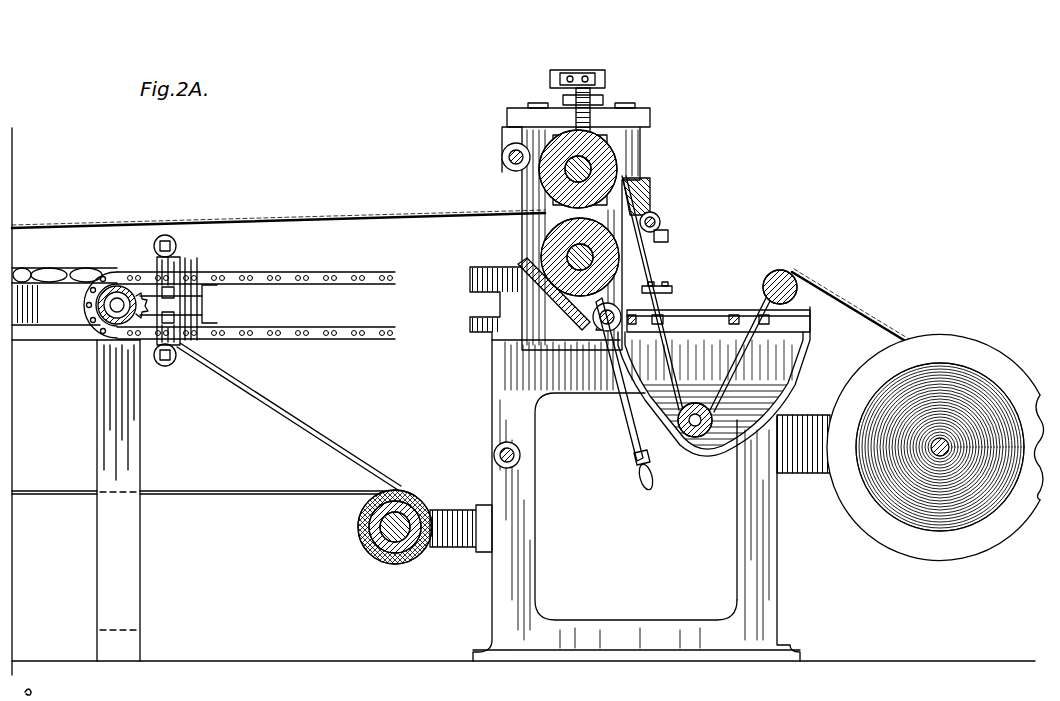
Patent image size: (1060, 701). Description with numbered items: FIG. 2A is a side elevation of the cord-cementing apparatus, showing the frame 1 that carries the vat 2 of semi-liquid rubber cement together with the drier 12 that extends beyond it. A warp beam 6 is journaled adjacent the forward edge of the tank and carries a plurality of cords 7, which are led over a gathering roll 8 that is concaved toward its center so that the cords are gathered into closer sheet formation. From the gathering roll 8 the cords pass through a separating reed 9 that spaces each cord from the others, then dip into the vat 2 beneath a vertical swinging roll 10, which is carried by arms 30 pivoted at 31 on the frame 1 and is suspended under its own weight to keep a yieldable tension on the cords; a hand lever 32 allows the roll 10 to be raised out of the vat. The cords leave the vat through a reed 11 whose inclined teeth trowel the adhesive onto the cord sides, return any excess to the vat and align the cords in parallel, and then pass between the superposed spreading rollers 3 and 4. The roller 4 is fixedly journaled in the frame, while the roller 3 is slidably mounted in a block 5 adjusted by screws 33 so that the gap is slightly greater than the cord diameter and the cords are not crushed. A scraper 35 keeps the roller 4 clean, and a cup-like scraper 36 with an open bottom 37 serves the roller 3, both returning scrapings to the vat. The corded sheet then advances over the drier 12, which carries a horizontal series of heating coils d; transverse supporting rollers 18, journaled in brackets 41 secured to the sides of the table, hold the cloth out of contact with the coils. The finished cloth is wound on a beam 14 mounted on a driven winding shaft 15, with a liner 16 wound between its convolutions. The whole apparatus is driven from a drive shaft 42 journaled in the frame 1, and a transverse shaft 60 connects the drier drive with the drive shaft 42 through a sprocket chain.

The frame 1 is at (515, 410).
The vat 2 is at (598, 335).
The spreading roller 3 is at (618, 200).
The spreading roller 4 is at (668, 236).
The sliding block 5 is at (592, 140).
The warp beam 6 is at (1003, 383).
The cords 7 is at (332, 226).
The gathering roll 8 is at (790, 275).
The separating reed 9 is at (740, 320).
The vertical swinging roll 10 is at (703, 405).
The reed 11 is at (650, 300).
The drier 12 is at (53, 292).
The winding beam 14 is at (412, 493).
The winding shaft 15 is at (362, 532).
The liner 16 is at (207, 491).
The supporting rollers 18 is at (153, 245).
The arms 30 is at (672, 310).
The pivot 31 is at (600, 320).
The hand lever 32 is at (633, 437).
The screws 33 is at (590, 95).
The scraper 35 is at (524, 270).
The cup-like scraper 36 is at (650, 193).
The open bottom 37 is at (660, 216).
The brackets 41 is at (182, 262).
The drive shaft 42 is at (497, 450).
The transverse shaft 60 is at (126, 305).
The heating coils d is at (60, 272).